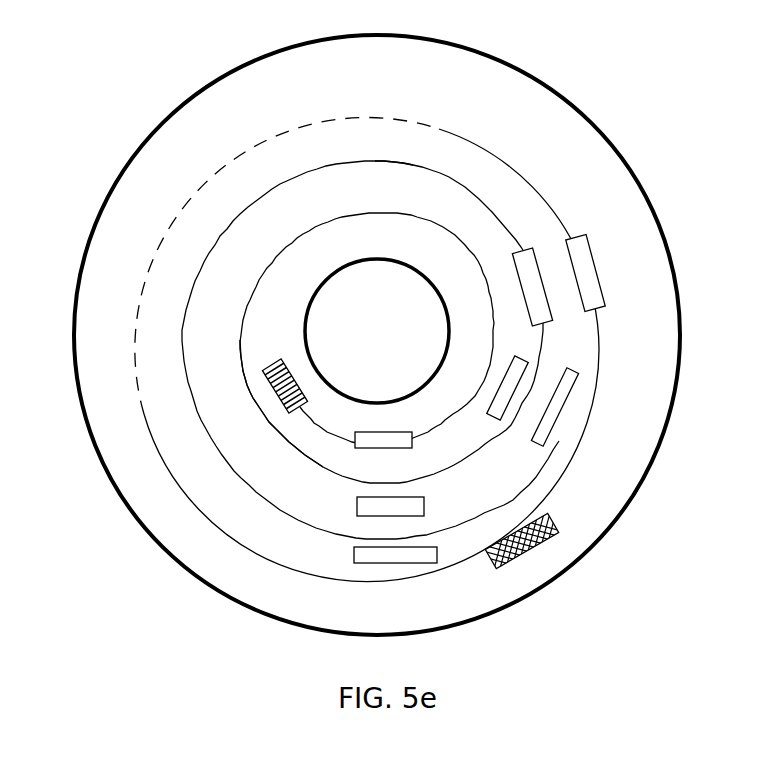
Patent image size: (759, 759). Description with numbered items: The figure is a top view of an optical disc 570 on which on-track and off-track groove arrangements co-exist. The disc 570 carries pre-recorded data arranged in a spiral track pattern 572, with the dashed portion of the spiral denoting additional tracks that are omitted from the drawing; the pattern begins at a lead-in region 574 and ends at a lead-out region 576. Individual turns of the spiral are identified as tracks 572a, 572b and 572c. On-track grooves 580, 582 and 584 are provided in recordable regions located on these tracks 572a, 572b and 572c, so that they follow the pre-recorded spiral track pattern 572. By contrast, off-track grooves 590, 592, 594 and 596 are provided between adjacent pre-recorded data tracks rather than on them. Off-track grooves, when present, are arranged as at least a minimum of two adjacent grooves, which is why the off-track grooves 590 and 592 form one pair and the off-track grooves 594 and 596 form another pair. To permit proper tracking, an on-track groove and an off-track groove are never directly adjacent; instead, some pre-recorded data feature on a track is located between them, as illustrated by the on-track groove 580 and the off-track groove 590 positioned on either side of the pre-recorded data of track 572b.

The disc 570 is at (629, 100).
The spiral track pattern 572 is at (310, 330).
The track 572a is at (320, 427).
The track 572b is at (410, 163).
The track 572c is at (408, 117).
The lead-in region 574 is at (278, 362).
The lead-out region 576 is at (530, 547).
The on-track groove 580 is at (412, 446).
The on-track groove 582 is at (530, 249).
The on-track groove 584 is at (596, 268).
The off-track groove 590 is at (358, 512).
The off-track groove 592 is at (373, 563).
The off-track groove 594 is at (506, 414).
The off-track groove 596 is at (562, 412).